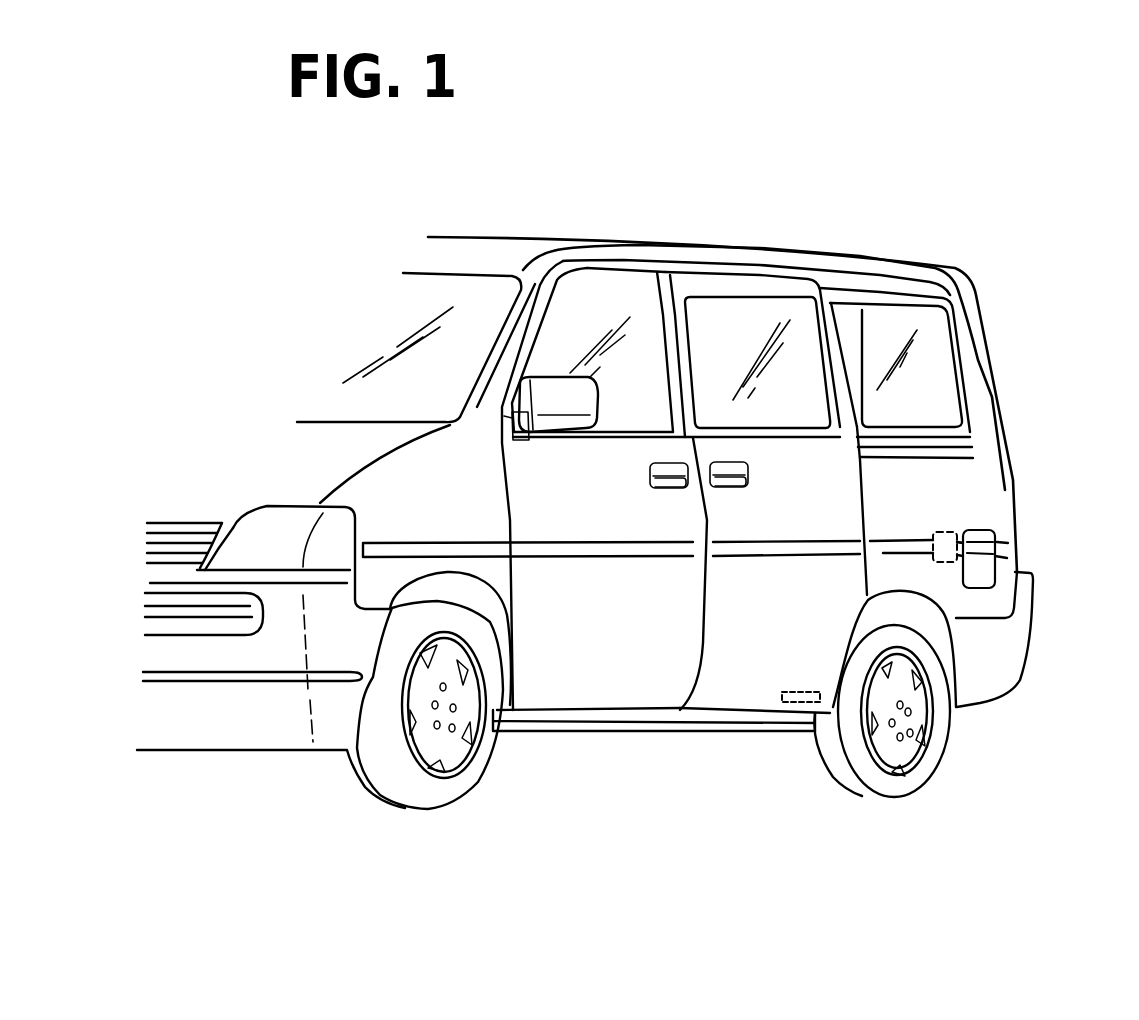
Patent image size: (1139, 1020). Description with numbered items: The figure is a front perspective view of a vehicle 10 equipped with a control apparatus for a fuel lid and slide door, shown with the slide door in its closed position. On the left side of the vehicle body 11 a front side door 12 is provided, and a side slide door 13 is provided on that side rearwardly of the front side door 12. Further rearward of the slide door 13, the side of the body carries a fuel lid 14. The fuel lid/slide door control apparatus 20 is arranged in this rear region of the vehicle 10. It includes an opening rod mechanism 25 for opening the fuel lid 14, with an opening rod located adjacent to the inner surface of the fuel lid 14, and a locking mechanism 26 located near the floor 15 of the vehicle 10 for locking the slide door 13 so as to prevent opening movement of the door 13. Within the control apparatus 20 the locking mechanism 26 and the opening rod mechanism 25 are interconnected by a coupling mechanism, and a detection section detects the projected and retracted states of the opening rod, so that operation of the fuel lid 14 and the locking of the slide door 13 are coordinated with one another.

The vehicle 10 is at (706, 192).
The vehicle body 11 is at (570, 240).
The front side door 12 is at (533, 497).
The side slide door 13 is at (827, 473).
The fuel lid 14 is at (982, 535).
The floor 15 is at (720, 717).
The fuel lid/slide door control apparatus 20 is at (952, 508).
The opening rod mechanism 25 is at (950, 528).
The locking mechanism 26 is at (797, 703).